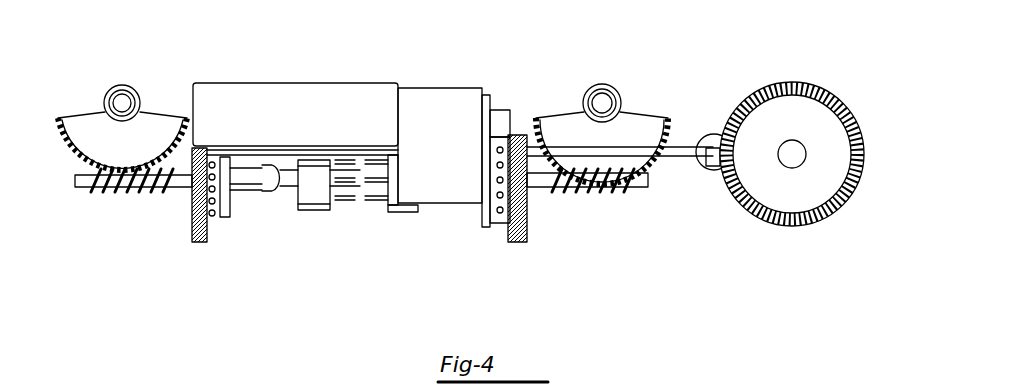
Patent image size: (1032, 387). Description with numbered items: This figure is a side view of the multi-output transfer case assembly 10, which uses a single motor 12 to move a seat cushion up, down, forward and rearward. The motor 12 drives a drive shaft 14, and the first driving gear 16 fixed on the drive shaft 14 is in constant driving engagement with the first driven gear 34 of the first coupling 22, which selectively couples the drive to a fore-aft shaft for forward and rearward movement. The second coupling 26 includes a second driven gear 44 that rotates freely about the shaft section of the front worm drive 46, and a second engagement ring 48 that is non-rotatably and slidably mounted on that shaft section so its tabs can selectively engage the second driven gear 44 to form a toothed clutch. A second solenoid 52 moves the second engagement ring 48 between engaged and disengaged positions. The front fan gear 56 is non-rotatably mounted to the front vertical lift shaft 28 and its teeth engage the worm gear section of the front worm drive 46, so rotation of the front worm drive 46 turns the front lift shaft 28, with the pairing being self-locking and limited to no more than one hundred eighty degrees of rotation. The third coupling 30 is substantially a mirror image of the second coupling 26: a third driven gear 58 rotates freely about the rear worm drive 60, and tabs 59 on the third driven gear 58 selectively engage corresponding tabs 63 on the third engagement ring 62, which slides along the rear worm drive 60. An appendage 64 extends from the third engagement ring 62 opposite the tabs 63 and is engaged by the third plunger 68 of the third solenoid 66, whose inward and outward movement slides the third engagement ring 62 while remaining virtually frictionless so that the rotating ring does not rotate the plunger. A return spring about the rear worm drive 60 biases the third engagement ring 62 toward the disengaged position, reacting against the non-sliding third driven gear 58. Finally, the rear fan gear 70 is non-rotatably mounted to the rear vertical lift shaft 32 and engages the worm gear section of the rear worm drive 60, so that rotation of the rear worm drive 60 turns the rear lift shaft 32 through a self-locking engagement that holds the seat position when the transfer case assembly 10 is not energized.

The transfer case assembly 10 is at (125, 276).
The motor 12 is at (278, 83).
The drive shaft 14 is at (678, 140).
The first driving gear 16 is at (690, 174).
The first coupling 22 is at (792, 70).
The second coupling 26 is at (499, 246).
The front vertical lift shaft 28 is at (590, 86).
The third coupling 30 is at (233, 230).
The rear vertical lift shaft 32 is at (138, 86).
The first driven gear 34 is at (843, 205).
The second driven gear 44 is at (518, 245).
The front worm drive 46 is at (585, 190).
The second engagement ring 48 is at (487, 225).
The second solenoid 52 is at (400, 215).
The front fan gear 56 is at (550, 118).
The third driven gear 58 is at (192, 215).
The tabs 59 is at (220, 217).
The rear worm drive 60 is at (100, 190).
The third engagement ring 62 is at (243, 212).
The tabs 63 is at (236, 235).
The appendage 64 is at (275, 210).
The third solenoid 66 is at (318, 160).
The third plunger 68 is at (328, 212).
The rear fan gear 70 is at (62, 135).